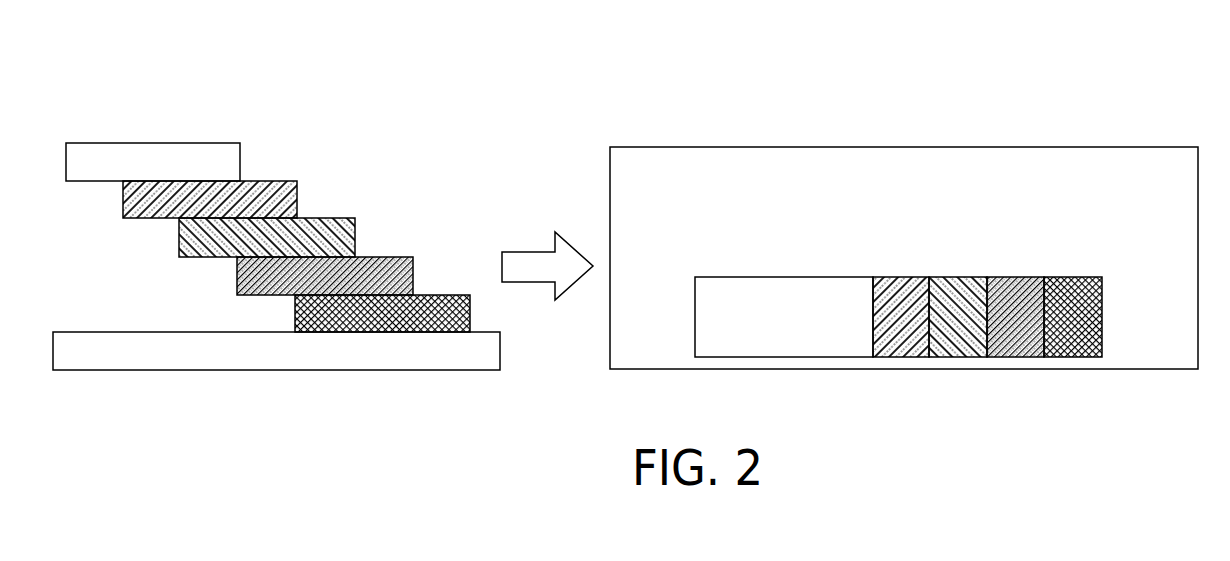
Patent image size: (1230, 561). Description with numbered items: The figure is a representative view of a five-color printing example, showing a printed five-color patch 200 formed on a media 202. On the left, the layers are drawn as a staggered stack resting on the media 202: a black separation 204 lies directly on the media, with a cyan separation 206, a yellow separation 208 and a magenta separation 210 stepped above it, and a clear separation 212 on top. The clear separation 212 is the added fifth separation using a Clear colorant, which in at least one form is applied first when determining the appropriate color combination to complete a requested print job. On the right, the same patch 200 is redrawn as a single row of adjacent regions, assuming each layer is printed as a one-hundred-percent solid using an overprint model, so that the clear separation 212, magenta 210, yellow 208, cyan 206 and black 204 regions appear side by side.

The printed 5-color patch 200 is at (620, 227).
The media 202 is at (372, 370).
The black separation 204 is at (443, 295).
The cyan separation 206 is at (380, 257).
The yellow separation 208 is at (322, 218).
The magenta separation 210 is at (269, 181).
The clear separation 212 is at (199, 143).